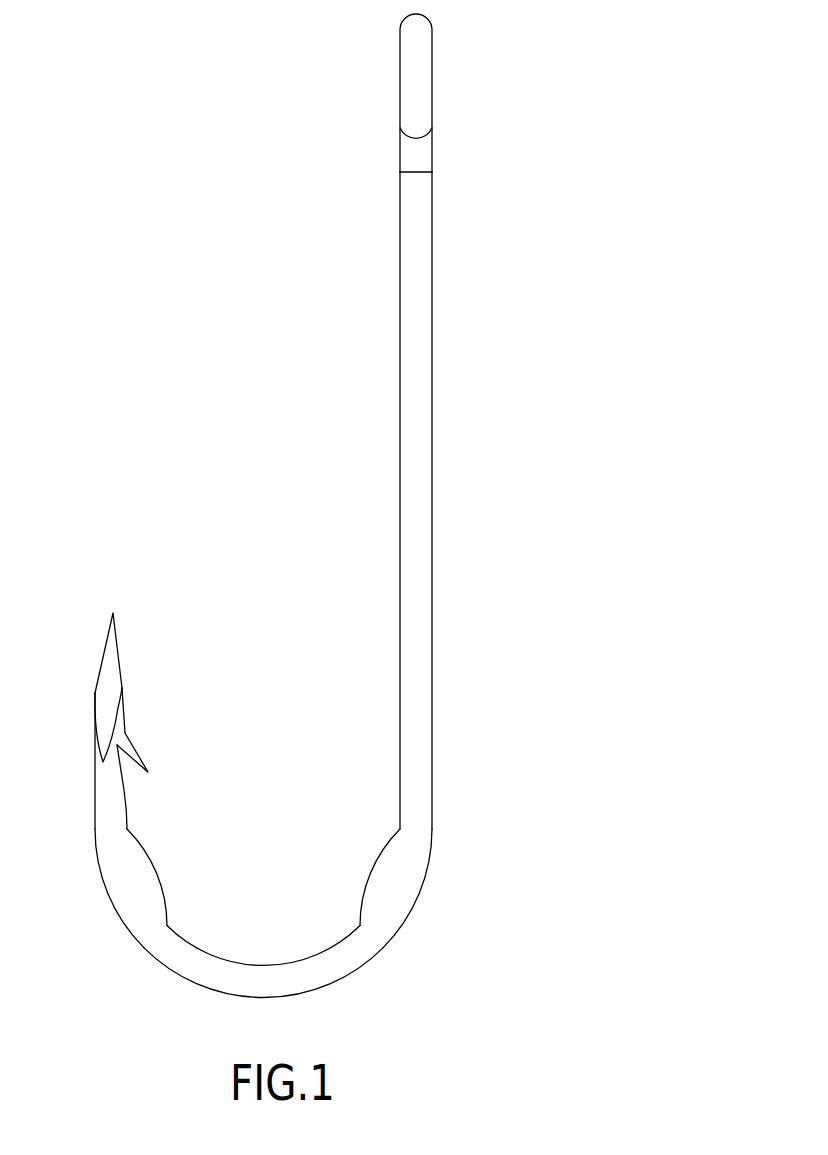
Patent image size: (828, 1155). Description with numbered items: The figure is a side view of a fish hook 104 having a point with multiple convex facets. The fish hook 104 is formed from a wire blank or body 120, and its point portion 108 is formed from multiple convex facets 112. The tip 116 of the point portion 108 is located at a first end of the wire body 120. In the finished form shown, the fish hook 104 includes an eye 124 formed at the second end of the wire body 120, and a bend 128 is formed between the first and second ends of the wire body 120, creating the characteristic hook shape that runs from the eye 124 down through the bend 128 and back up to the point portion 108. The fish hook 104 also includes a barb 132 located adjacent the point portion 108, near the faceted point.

The fish hook 104 is at (432, 640).
The point portion 108 is at (124, 706).
The convex facets 112 is at (96, 712).
The tip 116 is at (113, 613).
The wire body 120 is at (400, 768).
The eye 124 is at (400, 93).
The bend 128 is at (250, 963).
The barb 132 is at (128, 750).